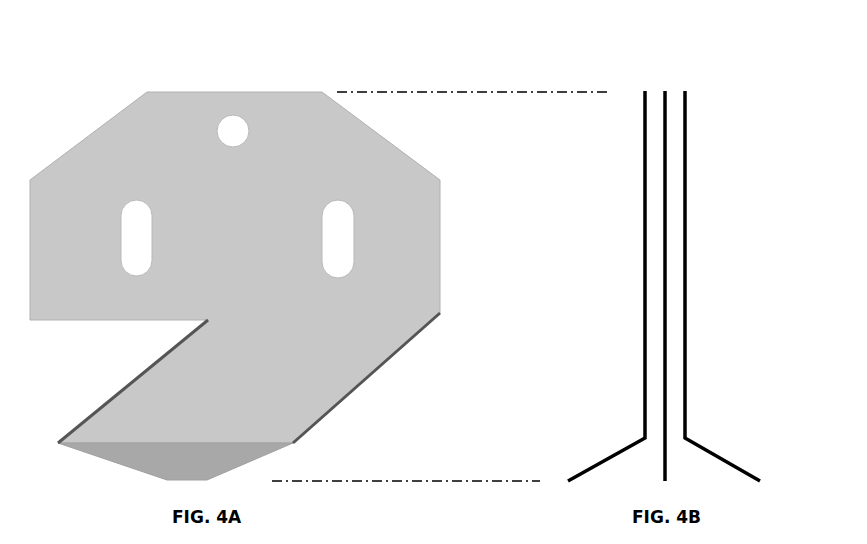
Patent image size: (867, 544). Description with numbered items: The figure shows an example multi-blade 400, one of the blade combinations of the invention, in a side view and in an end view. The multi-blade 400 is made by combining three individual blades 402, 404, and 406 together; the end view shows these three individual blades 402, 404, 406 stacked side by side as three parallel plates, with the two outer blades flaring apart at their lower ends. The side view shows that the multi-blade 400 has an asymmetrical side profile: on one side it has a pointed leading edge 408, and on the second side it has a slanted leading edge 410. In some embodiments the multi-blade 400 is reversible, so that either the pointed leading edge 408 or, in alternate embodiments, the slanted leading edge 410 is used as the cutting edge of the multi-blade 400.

In FIG. 4A, the multi-blade 400 is at (117, 69).
In FIG. 4B, the individual blade 402 is at (643, 240).
In FIG. 4B, the individual blade 404 is at (665, 91).
In FIG. 4B, the individual blade 406 is at (687, 240).
In FIG. 4A, the pointed leading edge 408 is at (58, 443).
In FIG. 4A, the slanted leading edge 410 is at (310, 432).